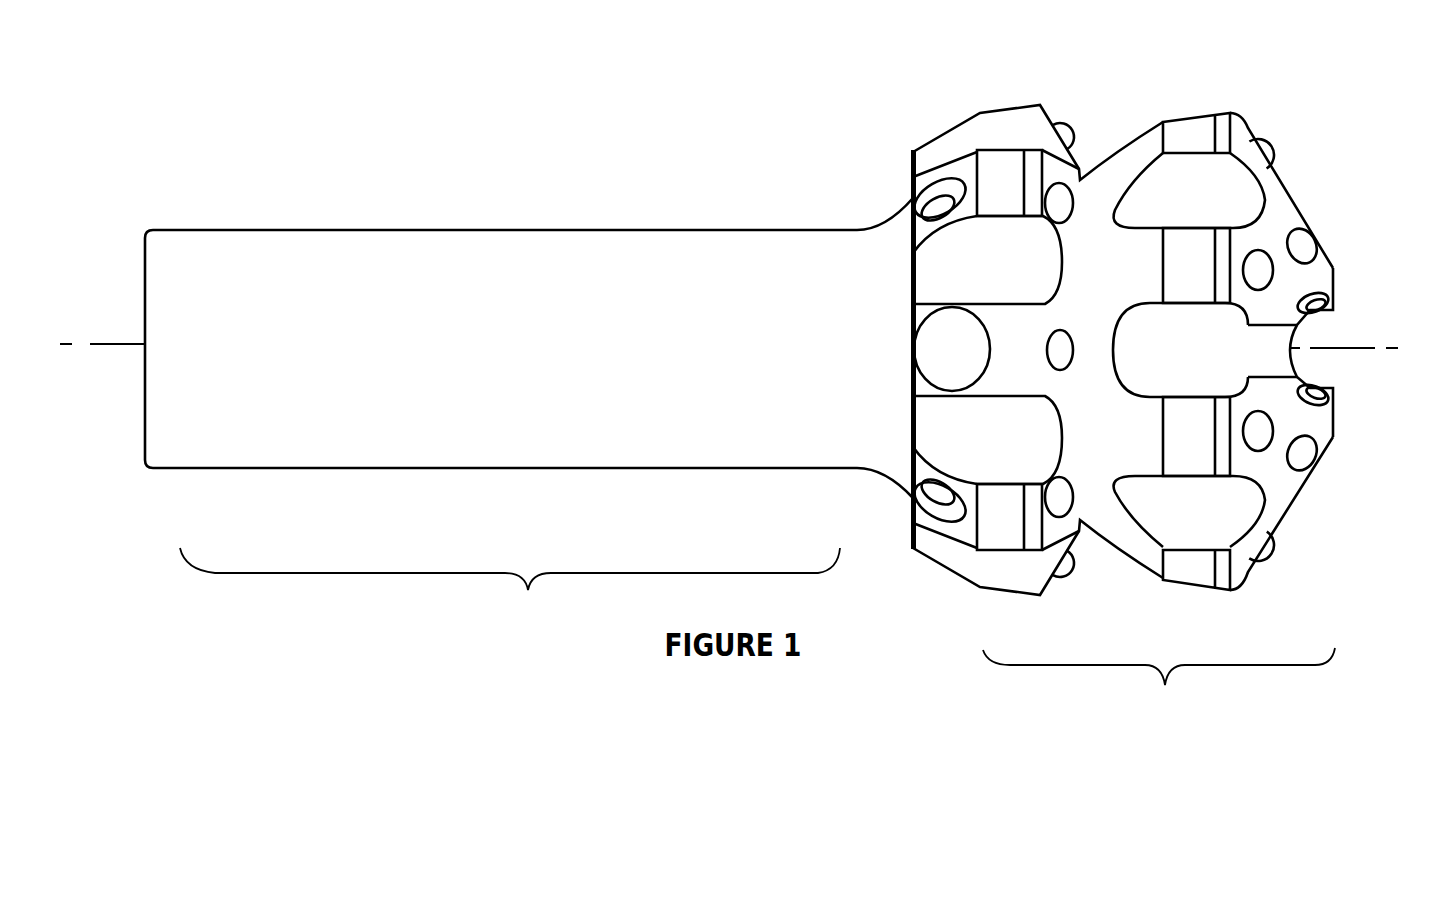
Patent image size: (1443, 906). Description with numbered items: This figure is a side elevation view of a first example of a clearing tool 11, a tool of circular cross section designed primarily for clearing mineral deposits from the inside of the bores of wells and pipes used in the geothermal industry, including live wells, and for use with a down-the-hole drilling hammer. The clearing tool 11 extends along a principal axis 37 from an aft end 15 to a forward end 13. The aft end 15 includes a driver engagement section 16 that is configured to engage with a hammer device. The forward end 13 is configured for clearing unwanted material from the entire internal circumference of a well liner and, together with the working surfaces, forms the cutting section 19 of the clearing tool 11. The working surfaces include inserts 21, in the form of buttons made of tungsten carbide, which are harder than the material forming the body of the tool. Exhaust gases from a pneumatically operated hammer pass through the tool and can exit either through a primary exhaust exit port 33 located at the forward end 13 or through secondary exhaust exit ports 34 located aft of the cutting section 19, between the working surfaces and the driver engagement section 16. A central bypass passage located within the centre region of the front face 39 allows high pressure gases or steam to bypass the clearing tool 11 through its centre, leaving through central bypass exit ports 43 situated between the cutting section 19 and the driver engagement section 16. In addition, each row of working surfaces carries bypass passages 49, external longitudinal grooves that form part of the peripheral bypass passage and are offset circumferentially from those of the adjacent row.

The clearing tool 11 is at (230, 123).
The forward end 13 is at (1312, 192).
The aft end 15 is at (120, 270).
The driver engagement section 16 is at (528, 598).
The cutting section 19 is at (1166, 693).
The inserts 21 is at (1273, 546).
The primary exhaust exit port 33 is at (1320, 368).
The secondary exhaust exit ports 34 is at (920, 197).
The principal axis 37 is at (1355, 343).
The front face 39 is at (1305, 222).
The central bypass exit ports 43 is at (923, 310).
The bypass passages 49 is at (993, 431).